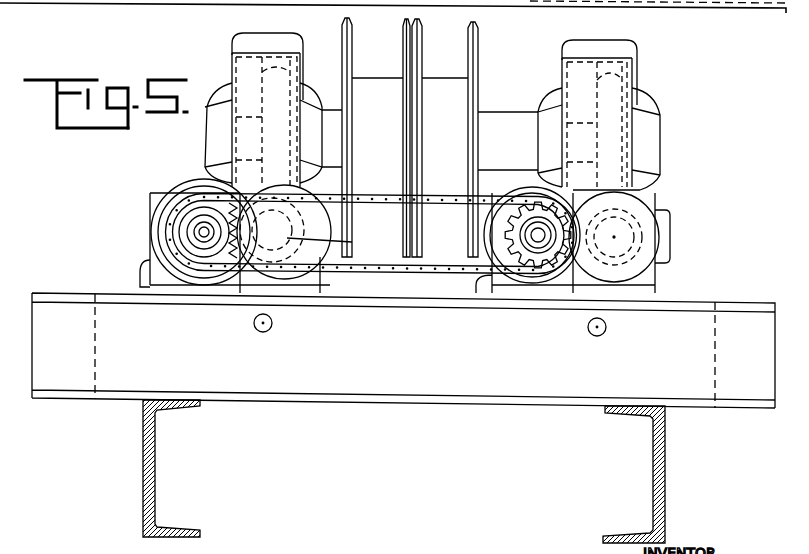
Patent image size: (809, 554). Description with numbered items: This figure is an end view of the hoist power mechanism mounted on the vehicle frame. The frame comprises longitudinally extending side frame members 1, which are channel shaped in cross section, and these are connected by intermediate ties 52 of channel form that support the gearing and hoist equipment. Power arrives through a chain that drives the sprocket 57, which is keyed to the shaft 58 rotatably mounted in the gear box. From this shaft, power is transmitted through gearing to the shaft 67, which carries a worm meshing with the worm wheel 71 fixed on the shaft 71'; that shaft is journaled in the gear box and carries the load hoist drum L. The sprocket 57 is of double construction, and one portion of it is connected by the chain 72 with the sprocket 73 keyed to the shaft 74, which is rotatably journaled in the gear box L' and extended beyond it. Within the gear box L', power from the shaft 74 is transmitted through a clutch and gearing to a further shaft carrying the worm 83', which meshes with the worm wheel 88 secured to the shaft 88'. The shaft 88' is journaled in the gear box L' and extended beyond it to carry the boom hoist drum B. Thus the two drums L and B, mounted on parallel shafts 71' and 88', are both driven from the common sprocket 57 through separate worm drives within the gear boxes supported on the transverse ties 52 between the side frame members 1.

The side frame member 1 is at (155, 520).
The intermediate tie 52 is at (403, 350).
The sprocket 57 is at (232, 226).
The shaft 58 is at (202, 232).
The shaft 67 is at (332, 244).
The worm wheel 71 is at (269, 110).
The shaft 71' is at (208, 160).
The chain 72 is at (420, 271).
The sprocket 73 is at (512, 232).
The shaft 74 is at (538, 240).
The worm 83' is at (633, 236).
The worm wheel 88 is at (592, 115).
The shaft 88' is at (565, 76).
The load hoist drum L is at (371, 142).
The boom hoist drum B is at (438, 144).
The gear box L' is at (654, 43).